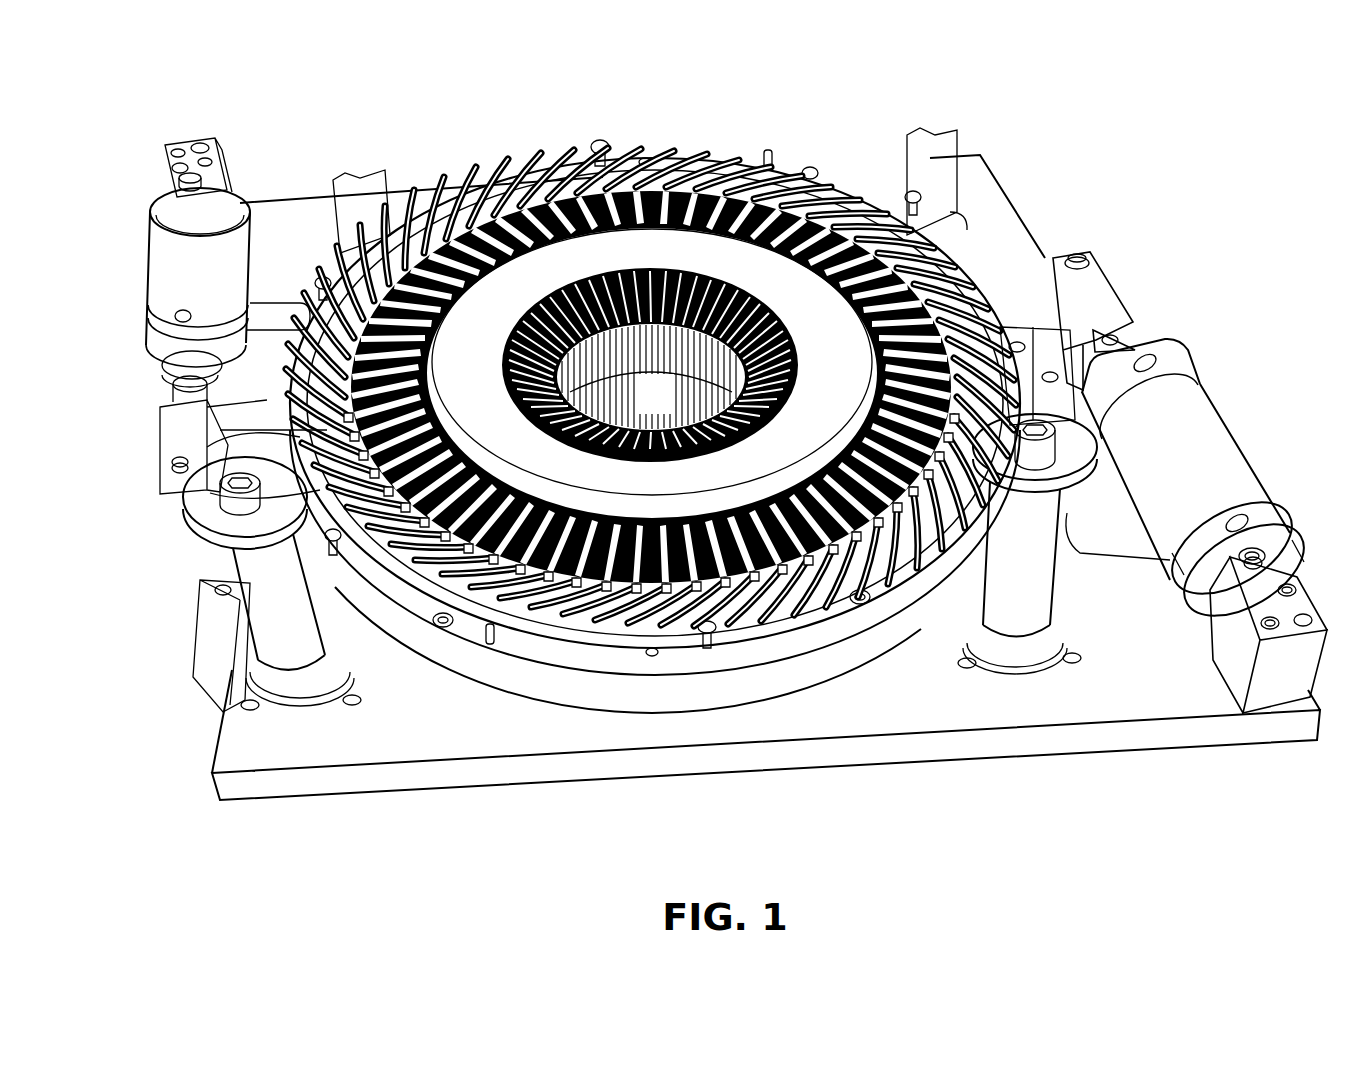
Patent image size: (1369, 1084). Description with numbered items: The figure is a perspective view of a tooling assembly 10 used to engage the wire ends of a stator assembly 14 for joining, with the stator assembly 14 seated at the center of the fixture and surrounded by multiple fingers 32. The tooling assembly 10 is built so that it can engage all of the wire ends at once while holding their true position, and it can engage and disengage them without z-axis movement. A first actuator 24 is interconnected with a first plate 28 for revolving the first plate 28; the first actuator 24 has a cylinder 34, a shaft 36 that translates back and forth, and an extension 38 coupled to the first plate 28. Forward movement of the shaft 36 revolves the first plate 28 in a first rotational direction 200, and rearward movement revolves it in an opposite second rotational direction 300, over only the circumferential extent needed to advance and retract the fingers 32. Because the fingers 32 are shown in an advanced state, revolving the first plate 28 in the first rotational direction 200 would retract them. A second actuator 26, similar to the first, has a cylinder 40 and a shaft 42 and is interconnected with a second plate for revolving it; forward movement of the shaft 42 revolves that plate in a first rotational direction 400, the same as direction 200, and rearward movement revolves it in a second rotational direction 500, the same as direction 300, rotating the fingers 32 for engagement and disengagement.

The tooling assembly 10 is at (1130, 200).
The stator assembly 14 is at (644, 408).
The first actuator 24 is at (1240, 430).
The second actuator 26 is at (140, 292).
The first plate 28 is at (567, 645).
The fingers 32 is at (685, 185).
The cylinder 34 is at (1224, 478).
The shaft 36 is at (1113, 326).
The extension 38 is at (1045, 292).
The cylinder 40 is at (177, 231).
The shaft 42 is at (192, 386).
The first rotational direction 200 is at (1028, 292).
The second rotational direction 300 is at (975, 230).
The first rotational direction 400 is at (172, 488).
The second rotational direction 500 is at (300, 440).